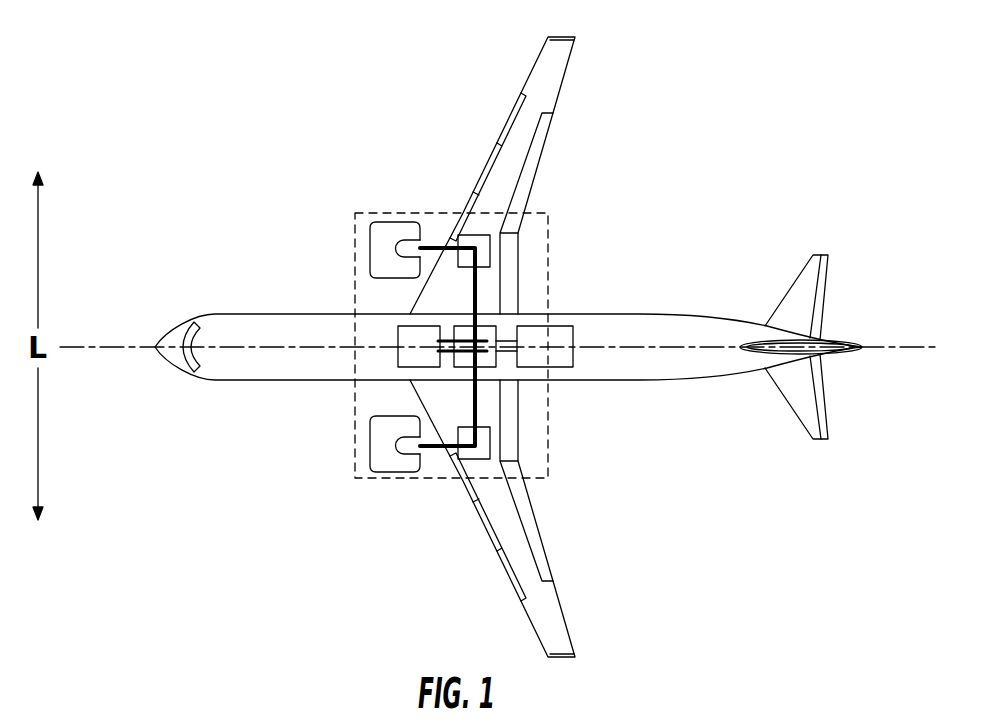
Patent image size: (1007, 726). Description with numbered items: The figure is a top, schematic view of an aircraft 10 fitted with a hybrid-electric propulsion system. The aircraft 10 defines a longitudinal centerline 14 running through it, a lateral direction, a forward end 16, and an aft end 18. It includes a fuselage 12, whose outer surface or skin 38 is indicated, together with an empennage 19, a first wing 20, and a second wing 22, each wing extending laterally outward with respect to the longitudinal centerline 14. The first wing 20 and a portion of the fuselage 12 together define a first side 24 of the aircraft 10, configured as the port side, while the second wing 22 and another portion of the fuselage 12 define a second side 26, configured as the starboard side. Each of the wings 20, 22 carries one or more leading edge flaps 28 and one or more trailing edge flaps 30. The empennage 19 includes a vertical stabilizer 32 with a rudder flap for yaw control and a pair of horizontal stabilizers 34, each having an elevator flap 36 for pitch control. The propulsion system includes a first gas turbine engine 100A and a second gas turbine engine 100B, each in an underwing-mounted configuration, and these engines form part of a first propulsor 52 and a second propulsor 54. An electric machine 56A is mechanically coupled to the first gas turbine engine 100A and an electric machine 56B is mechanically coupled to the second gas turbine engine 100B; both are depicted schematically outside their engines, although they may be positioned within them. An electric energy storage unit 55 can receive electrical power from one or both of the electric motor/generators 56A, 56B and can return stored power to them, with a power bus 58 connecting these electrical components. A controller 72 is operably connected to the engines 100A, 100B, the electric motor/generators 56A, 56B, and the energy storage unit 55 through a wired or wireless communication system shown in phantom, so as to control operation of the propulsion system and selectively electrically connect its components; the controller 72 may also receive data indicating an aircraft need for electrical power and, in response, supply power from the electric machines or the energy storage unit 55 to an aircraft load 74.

The aircraft 10 is at (683, 128).
The fuselage 12 is at (214, 368).
The longitudinal centerline 14 is at (86, 344).
The forward end 16 is at (154, 368).
The aft end 18 is at (793, 433).
The empennage 19 is at (752, 397).
The first wing 20 is at (522, 568).
The second wing 22 is at (555, 73).
The first side 24 is at (280, 401).
The second side 26 is at (277, 312).
The leading edge flap 28 is at (482, 526).
The trailing edge flap 30 is at (540, 538).
The vertical stabilizer 32 is at (818, 336).
The horizontal stabilizer 34 is at (800, 277).
The elevator flap 36 is at (826, 276).
The outer surface or skin 38 is at (637, 381).
The first propulsor 52 is at (336, 441).
The second propulsor 54 is at (838, 401).
The electric energy storage unit 55 is at (405, 342).
The first electric motor/generator 56A is at (466, 462).
The second electric motor/generator 56B is at (491, 255).
The power bus 58 is at (548, 410).
The controller 72 is at (458, 368).
The aircraft load 74 is at (556, 326).
The first gas turbine engine 100A is at (378, 463).
The second gas turbine engine 100B is at (380, 221).